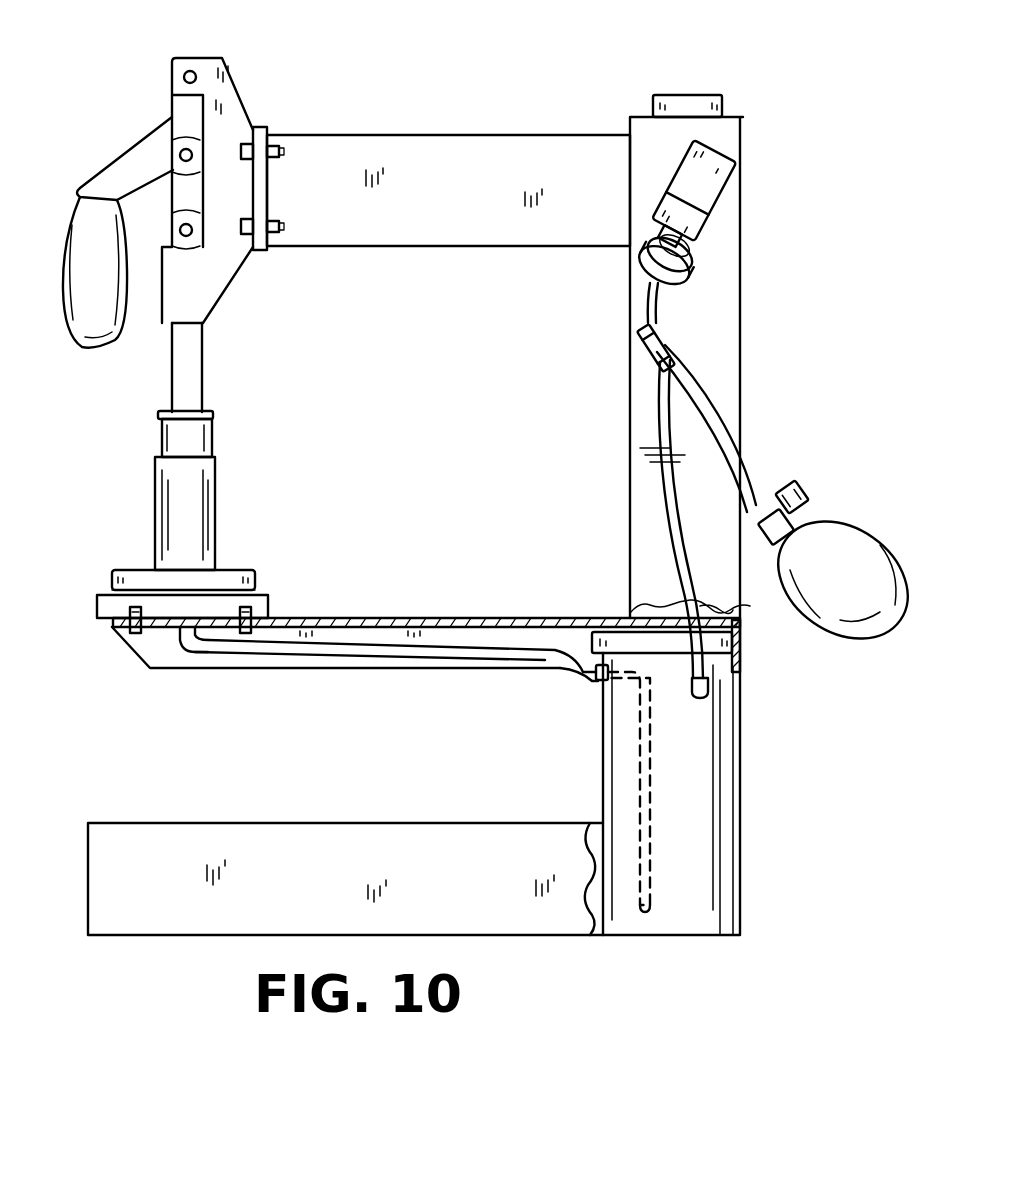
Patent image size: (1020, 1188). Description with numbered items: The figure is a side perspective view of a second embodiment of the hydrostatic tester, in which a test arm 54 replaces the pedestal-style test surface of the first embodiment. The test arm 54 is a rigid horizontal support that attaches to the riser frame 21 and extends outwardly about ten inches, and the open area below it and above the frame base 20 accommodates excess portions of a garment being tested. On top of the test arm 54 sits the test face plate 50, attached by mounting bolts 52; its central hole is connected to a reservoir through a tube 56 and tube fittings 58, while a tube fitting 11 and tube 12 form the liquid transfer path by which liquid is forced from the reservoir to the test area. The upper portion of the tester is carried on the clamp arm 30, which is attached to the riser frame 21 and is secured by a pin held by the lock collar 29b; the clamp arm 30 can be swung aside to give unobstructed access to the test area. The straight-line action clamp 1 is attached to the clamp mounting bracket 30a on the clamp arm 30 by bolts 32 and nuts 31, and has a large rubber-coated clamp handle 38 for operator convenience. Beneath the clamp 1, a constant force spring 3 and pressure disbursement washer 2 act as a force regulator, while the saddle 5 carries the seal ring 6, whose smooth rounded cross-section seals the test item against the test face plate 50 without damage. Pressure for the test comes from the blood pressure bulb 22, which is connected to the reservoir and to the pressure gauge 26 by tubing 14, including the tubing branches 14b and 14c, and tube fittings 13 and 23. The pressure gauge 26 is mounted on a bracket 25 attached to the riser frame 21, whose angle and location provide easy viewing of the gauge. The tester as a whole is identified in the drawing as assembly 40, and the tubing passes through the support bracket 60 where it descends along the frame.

The straight-line action clamp 1 is at (137, 157).
The pressure disbursement washer 2 is at (160, 418).
The constant force spring 3 is at (160, 437).
The saddle 5 is at (195, 510).
The seal ring 6 is at (253, 570).
The tube fitting 11 is at (195, 655).
The tube 12 is at (650, 808).
The tube fitting 13 is at (700, 698).
The tubing 14 is at (680, 538).
The tubing 14b is at (748, 485).
The tubing 14c is at (643, 302).
The frame base 20 is at (475, 833).
The riser frame 21 is at (630, 565).
The blood pressure bulb 22 is at (842, 532).
The tube fitting 23 is at (667, 337).
The bracket 25 is at (688, 276).
The pressure gauge 26 is at (668, 190).
The lock collar 29b is at (687, 95).
The clamp arm 30 is at (473, 145).
The clamp mounting bracket 30a is at (267, 127).
The nuts 31 is at (272, 238).
The bolts 32 is at (247, 240).
The clamp handle 38 is at (80, 348).
The apparatus 40 is at (437, 92).
The test face plate 50 is at (97, 603).
The mounting bolts 52 is at (137, 630).
The test arm 54 is at (450, 618).
The tube 56 is at (445, 660).
The tube fittings 58 is at (596, 679).
The support bracket 60 is at (742, 645).